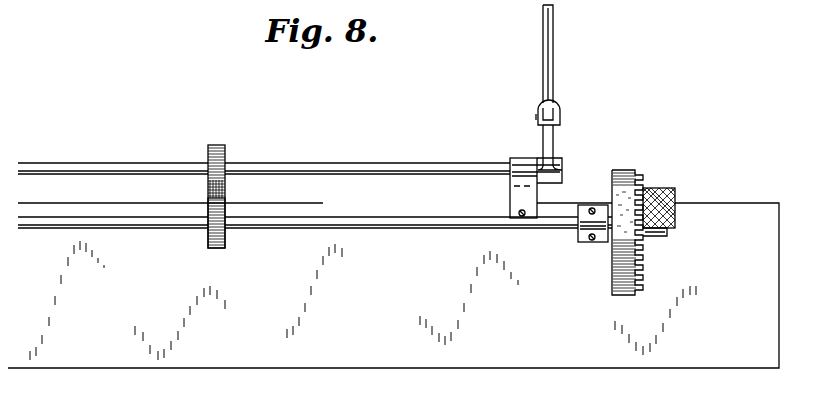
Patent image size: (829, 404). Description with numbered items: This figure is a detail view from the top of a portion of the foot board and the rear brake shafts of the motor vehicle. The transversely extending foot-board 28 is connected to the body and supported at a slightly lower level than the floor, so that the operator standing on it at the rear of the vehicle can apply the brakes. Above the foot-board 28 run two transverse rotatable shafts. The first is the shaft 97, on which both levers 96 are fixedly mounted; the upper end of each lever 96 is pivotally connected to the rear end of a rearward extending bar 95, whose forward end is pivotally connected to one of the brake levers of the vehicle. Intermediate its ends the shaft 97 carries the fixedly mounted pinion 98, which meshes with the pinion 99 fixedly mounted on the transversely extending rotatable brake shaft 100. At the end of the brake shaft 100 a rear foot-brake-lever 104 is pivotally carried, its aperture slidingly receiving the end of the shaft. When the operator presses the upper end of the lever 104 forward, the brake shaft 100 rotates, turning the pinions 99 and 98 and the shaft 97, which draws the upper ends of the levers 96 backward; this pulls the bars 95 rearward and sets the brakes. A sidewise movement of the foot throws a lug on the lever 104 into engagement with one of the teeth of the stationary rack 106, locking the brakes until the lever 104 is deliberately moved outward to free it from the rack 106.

The foot-board 28 is at (393, 285).
The rearward extending bar 95 is at (554, 77).
The lever 96 is at (553, 144).
The transversely extending rotatable shaft 97 is at (446, 169).
The pinion 98 is at (219, 155).
The pinion 99 is at (214, 245).
The brake shaft 100 is at (400, 226).
The rear foot-brake-lever 104 is at (676, 230).
The stationary rack 106 is at (627, 263).